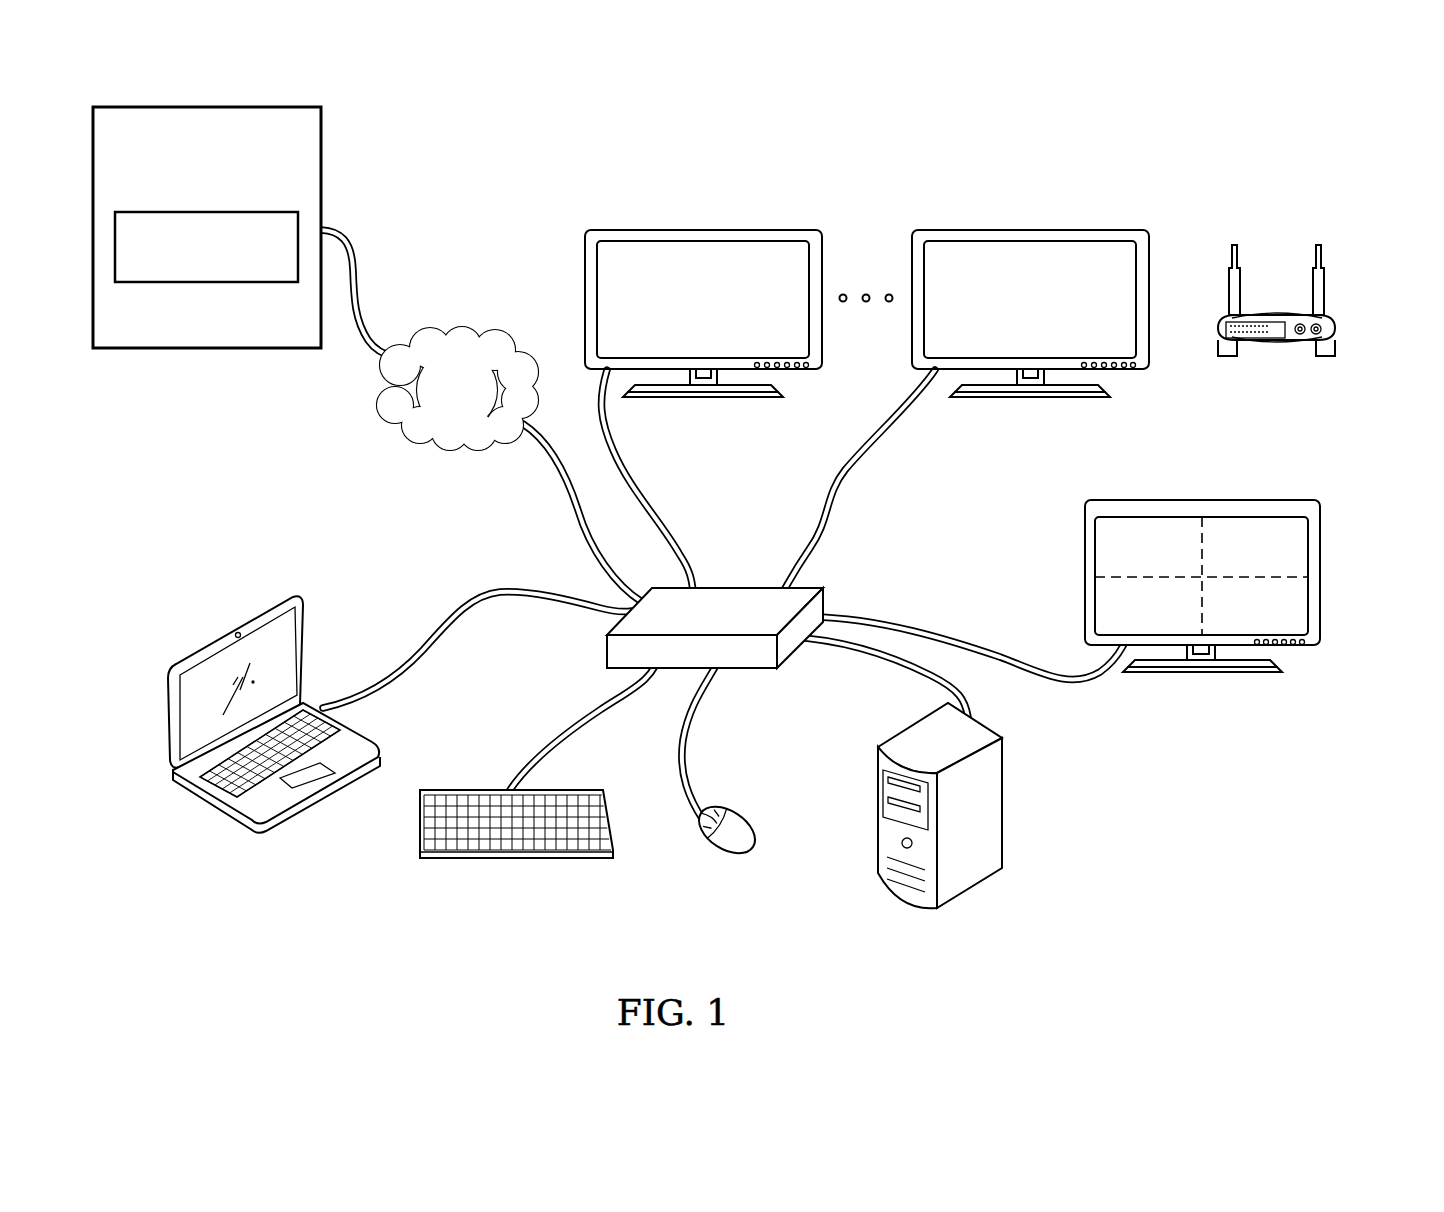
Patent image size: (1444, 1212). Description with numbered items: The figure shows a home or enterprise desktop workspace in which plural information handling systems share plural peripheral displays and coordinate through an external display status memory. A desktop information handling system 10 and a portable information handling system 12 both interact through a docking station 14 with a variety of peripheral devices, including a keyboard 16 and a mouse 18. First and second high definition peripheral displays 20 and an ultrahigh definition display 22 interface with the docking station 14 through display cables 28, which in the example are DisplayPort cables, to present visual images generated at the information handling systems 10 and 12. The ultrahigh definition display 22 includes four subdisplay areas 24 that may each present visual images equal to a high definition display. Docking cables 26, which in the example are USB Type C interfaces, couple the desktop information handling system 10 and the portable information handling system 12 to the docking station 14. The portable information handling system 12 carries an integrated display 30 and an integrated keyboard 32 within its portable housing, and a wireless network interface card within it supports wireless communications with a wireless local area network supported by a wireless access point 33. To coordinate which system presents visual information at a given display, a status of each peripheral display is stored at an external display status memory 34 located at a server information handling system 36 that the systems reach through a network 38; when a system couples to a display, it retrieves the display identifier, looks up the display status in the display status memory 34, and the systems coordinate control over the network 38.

The desktop information handling system 10 is at (968, 890).
The portable information handling system 12 is at (242, 762).
The docking station 14 is at (723, 588).
The keyboard 16 is at (511, 862).
The mouse 18 is at (737, 855).
The high definition peripheral display 20 is at (1053, 200).
The ultrahigh definition display 22 is at (1263, 634).
The subdisplay areas 24 is at (1268, 577).
The docking cable 26 is at (836, 645).
The display cables 28 is at (866, 452).
The integrated display 30 is at (202, 672).
The integrated keyboard 32 is at (222, 785).
The wireless access point 33 is at (1337, 328).
The display status memory 34 is at (207, 283).
The server information handling system 36 is at (237, 227).
The network 38 is at (492, 335).